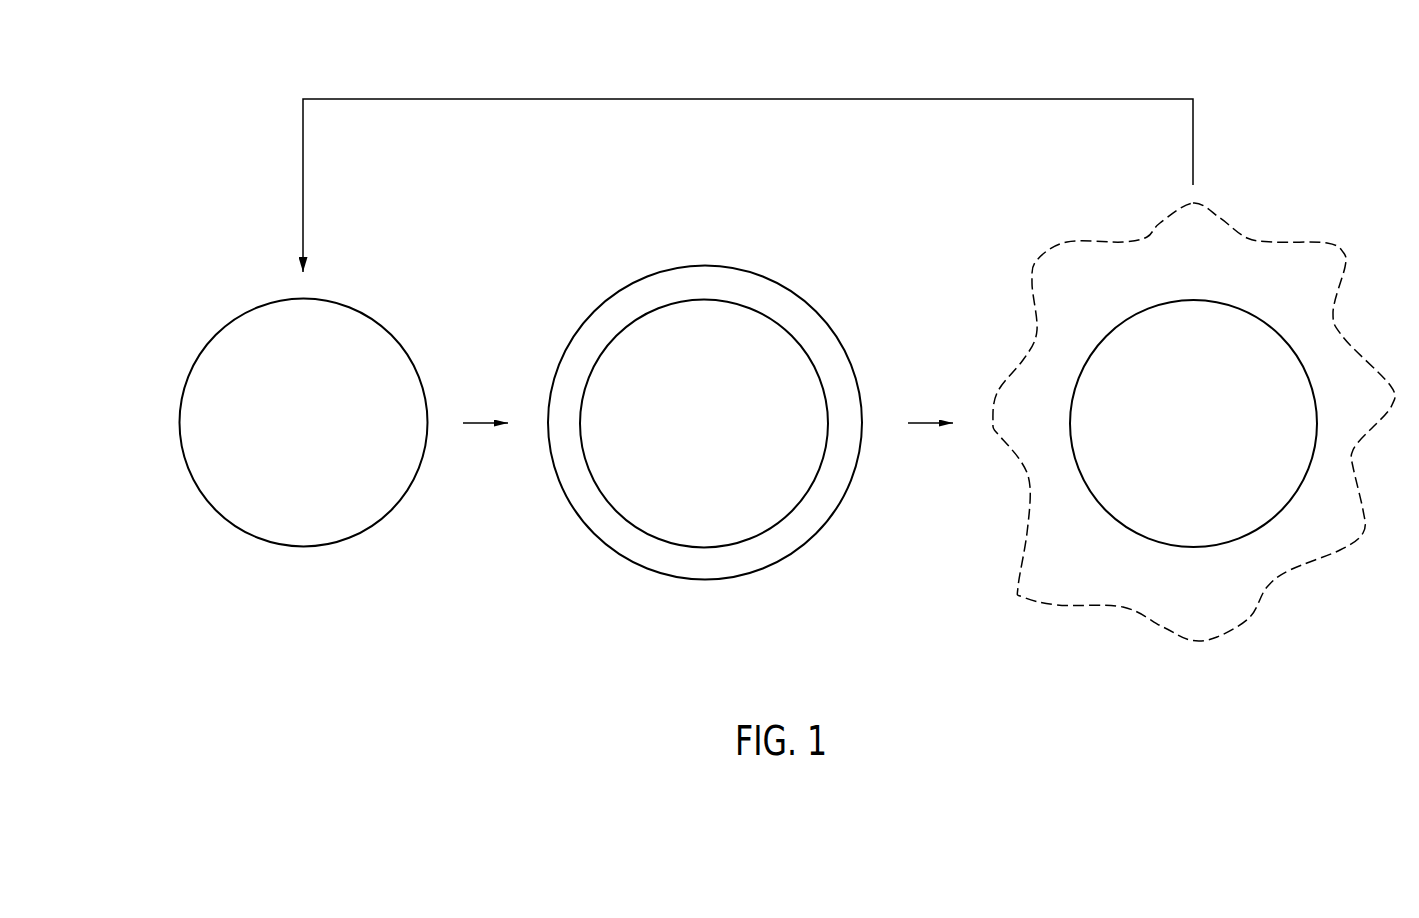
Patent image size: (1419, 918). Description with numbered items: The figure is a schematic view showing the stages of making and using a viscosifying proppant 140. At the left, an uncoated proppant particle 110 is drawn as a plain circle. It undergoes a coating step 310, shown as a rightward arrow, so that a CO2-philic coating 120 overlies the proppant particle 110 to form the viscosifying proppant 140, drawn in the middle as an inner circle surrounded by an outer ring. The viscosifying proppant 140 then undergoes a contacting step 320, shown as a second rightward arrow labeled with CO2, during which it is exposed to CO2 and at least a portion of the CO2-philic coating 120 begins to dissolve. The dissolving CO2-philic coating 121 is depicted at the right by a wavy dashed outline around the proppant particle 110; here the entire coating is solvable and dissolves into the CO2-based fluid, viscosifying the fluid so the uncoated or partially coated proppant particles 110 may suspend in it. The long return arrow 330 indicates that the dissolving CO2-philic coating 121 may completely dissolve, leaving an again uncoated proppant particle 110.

The proppant particle 110 is at (262, 553).
The CO2-philic coating 120 is at (777, 284).
The dissolving CO2-philic coating 121 is at (1266, 243).
The viscosifying proppant 140 is at (705, 463).
The coating step 310 is at (480, 423).
The contacting step 320 is at (921, 423).
The arrow 330 is at (803, 99).